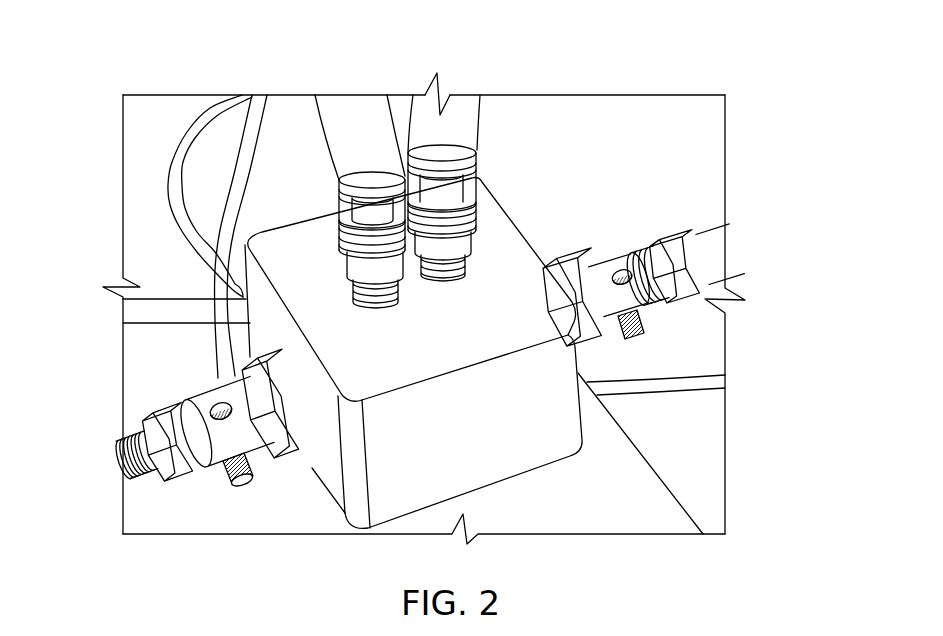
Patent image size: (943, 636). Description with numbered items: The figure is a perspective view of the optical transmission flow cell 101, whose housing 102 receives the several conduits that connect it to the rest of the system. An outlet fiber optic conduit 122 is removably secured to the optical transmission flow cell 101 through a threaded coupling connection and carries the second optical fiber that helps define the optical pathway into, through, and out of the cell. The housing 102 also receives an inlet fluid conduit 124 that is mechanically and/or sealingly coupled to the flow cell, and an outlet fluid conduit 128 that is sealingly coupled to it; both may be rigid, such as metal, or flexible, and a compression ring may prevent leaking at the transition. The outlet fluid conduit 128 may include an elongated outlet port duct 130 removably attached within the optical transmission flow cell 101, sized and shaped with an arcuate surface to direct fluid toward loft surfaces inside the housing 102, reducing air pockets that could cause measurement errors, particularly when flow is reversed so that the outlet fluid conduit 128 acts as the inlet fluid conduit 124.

The optical transmission flow cell 101 is at (618, 59).
The housing 102 is at (283, 235).
The outlet fiber optic conduit 122 is at (720, 243).
The inlet fluid conduit 124 is at (460, 102).
The outlet fluid conduit 128 is at (348, 106).
The elongated outlet port duct 130 is at (377, 250).